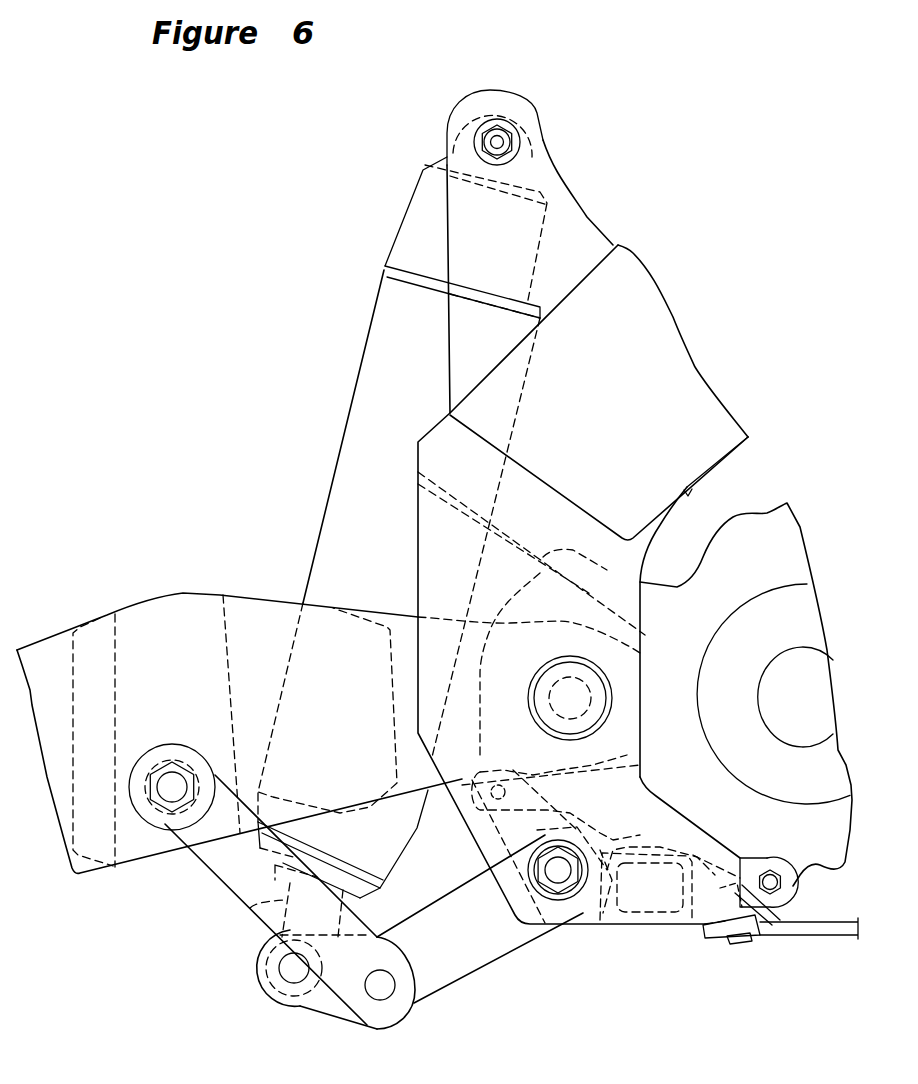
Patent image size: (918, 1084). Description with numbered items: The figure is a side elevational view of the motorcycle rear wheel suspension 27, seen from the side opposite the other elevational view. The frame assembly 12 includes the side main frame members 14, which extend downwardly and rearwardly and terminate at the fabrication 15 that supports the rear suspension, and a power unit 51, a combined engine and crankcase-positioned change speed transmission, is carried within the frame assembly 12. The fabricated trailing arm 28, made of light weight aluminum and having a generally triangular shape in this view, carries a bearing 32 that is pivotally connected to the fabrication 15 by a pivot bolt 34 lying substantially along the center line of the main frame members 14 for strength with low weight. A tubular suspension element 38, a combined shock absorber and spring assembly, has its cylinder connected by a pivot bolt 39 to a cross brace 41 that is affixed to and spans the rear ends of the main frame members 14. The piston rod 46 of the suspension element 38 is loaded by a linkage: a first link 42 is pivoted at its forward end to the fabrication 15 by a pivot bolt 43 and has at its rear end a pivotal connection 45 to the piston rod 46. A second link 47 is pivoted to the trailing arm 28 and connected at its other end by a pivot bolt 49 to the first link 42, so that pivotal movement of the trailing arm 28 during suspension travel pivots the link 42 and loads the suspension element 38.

The frame assembly 12 is at (598, 258).
The side main frame members 14 is at (720, 419).
The fabrication 15 is at (412, 517).
The rear wheel suspension 27 is at (603, 966).
The trailing arm 28 is at (150, 590).
The bearing 32 is at (593, 697).
The pivot bolt 34 is at (582, 660).
The suspension element 38 is at (369, 345).
The pivot bolt 39 is at (503, 123).
The cross brace 41 is at (557, 170).
The first link 42 is at (443, 990).
The pivot bolt 43 is at (167, 782).
The pivotal connection 45 is at (283, 975).
The piston rod 46 is at (250, 908).
The second link 47 is at (210, 873).
The pivot bolt 49 is at (378, 1000).
The power unit 51 is at (735, 503).